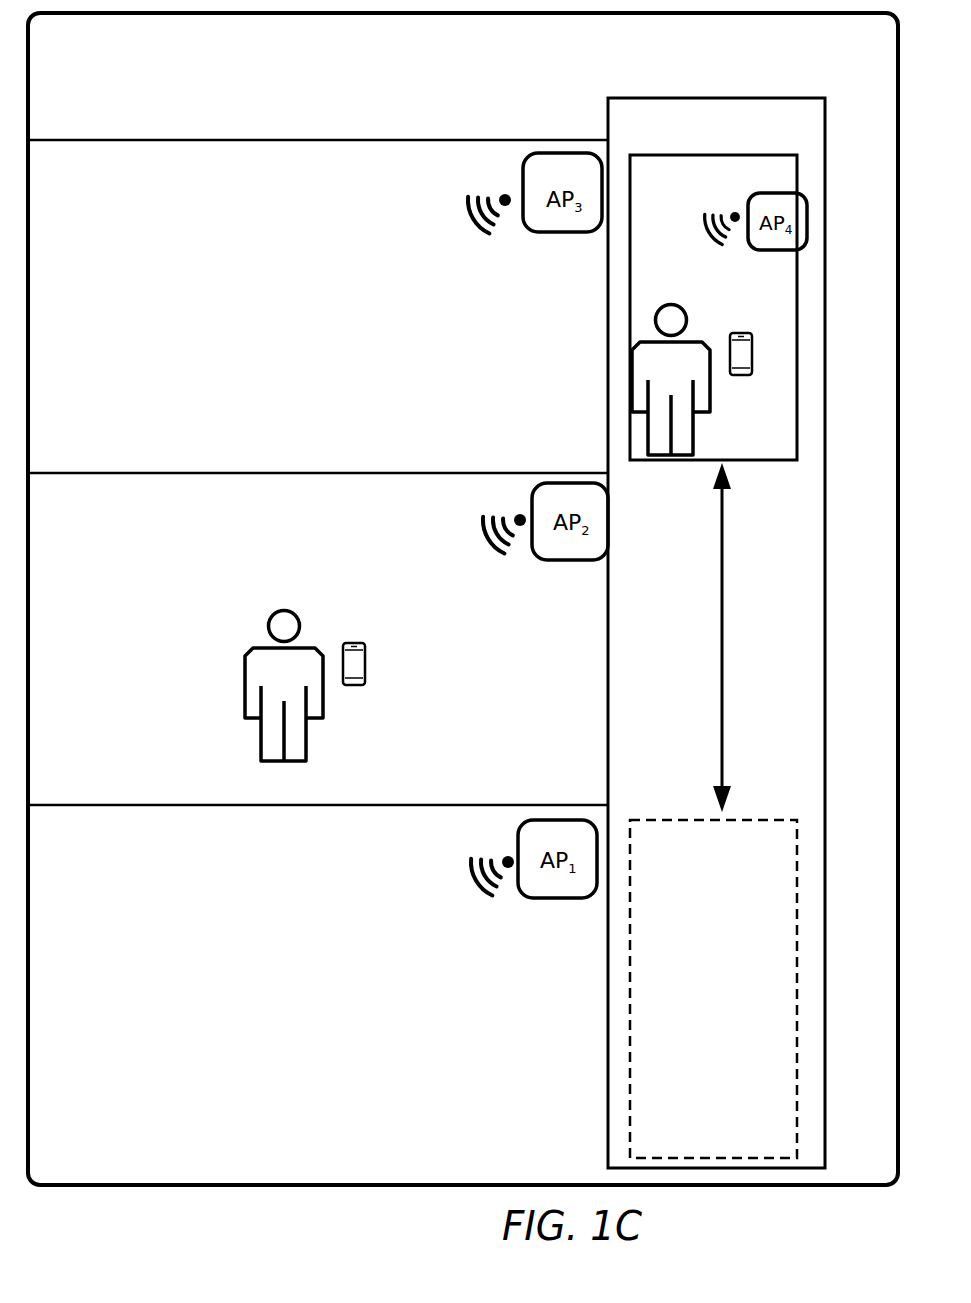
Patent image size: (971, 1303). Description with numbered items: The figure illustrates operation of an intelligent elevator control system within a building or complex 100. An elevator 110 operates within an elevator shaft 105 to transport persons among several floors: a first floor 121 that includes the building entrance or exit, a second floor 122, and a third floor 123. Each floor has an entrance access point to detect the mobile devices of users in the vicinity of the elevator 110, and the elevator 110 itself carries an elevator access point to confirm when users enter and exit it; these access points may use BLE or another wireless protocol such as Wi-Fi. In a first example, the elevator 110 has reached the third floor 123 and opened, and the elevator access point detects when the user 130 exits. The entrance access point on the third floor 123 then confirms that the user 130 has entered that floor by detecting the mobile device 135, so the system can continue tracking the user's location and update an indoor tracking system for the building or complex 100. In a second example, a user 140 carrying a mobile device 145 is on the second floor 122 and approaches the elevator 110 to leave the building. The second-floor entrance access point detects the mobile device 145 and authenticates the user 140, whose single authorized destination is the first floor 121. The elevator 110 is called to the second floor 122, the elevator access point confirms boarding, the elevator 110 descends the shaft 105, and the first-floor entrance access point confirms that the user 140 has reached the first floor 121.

The building or complex 100 is at (589, 50).
The elevator shaft 105 is at (716, 633).
The elevator 110 is at (713, 656).
The first floor 121 is at (318, 850).
The second floor 122 is at (318, 515).
The third floor 123 is at (318, 176).
The user 130 is at (705, 342).
The mobile device 135 is at (741, 392).
The user 140 is at (318, 646).
The mobile device 145 is at (357, 703).